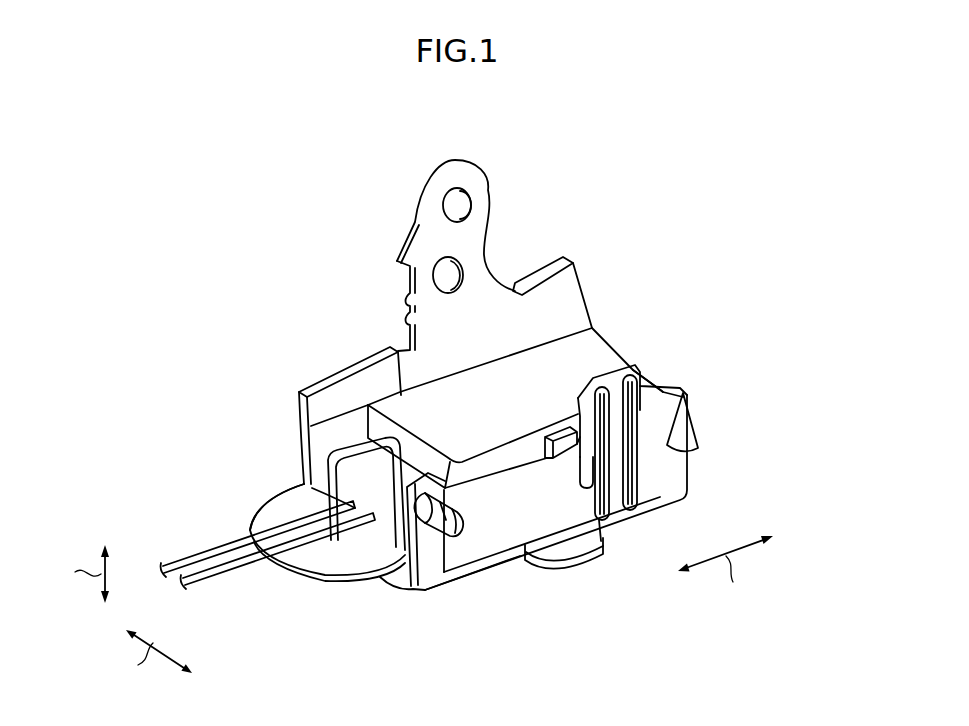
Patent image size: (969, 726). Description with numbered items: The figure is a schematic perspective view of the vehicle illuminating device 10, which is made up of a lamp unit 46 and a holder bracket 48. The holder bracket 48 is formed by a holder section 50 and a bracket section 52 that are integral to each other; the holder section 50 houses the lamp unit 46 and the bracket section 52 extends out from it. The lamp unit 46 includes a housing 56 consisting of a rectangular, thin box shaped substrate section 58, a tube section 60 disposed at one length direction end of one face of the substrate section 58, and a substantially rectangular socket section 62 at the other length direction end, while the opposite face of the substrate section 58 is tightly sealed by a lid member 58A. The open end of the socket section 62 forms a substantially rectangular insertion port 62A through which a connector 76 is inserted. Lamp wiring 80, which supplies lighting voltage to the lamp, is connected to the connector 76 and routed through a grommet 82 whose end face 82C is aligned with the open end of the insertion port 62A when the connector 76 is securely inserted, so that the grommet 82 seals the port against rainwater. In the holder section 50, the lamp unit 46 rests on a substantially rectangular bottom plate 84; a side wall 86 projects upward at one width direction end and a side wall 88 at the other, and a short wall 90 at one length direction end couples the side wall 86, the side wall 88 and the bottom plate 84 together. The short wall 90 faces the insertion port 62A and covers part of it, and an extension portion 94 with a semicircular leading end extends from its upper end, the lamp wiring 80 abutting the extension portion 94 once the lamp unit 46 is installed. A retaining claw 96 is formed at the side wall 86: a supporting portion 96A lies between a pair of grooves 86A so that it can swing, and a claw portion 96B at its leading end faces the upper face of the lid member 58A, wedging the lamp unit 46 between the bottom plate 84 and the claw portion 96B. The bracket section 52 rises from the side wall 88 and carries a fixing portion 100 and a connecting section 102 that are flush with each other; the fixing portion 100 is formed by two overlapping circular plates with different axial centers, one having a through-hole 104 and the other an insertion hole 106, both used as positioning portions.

The vehicle illuminating device 10 is at (716, 204).
The lamp unit 46 is at (641, 338).
The holder bracket 48 is at (280, 251).
The holder section 50 is at (268, 428).
The bracket section 52 is at (319, 286).
The housing 56 is at (548, 652).
The substrate section 58 is at (456, 470).
The lid member 58A is at (650, 376).
The tube section 60 is at (558, 563).
The socket section 62 is at (425, 562).
The insertion port 62A is at (420, 510).
The connector 76 is at (242, 507).
The lamp wiring 80 is at (243, 551).
The grommet 82 is at (338, 484).
The end face 82C is at (355, 528).
The bottom plate 84 is at (438, 588).
The side wall 86 is at (662, 418).
The grooves 86A is at (641, 452).
The side wall 88 is at (320, 438).
The short wall 90 is at (396, 582).
The extension portion 94 is at (303, 560).
The retaining claw 96 is at (781, 450).
The supporting portion 96A is at (618, 480).
The claw portion 96B is at (601, 406).
The fixing portion 100 is at (418, 267).
The connecting section 102 is at (340, 372).
The through-hole 104 is at (465, 204).
The insertion hole 106 is at (455, 273).